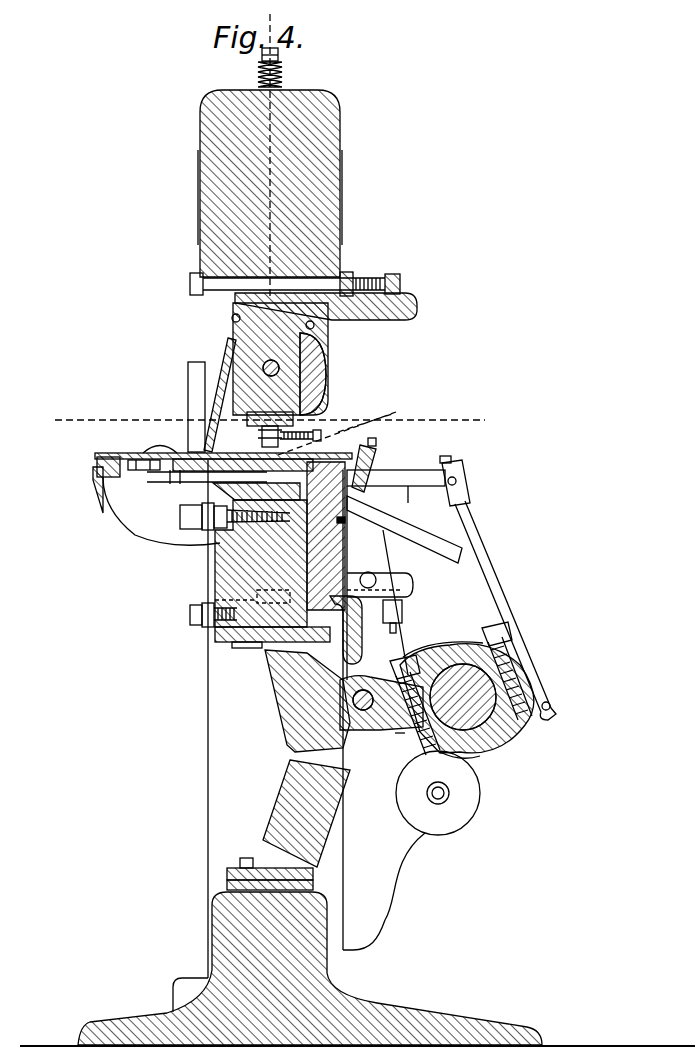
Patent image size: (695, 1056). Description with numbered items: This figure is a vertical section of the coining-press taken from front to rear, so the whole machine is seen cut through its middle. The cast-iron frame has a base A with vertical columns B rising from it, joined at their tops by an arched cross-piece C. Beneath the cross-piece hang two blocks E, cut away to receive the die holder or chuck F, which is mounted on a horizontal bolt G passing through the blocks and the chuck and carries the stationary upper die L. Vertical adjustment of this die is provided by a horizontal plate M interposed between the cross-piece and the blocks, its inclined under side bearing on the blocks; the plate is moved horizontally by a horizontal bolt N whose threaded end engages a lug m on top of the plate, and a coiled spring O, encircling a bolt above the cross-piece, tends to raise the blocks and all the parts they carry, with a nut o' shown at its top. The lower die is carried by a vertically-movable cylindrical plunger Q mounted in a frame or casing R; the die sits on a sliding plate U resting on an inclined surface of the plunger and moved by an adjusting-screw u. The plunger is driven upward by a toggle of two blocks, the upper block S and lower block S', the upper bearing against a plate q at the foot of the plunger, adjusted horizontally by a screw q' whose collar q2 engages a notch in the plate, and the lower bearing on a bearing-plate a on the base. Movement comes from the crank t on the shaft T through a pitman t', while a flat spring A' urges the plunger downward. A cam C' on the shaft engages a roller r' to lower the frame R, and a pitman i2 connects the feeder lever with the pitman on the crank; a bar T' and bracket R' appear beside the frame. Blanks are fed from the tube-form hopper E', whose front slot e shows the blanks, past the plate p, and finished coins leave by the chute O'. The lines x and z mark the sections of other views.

The cross-piece C is at (282, 183).
The coiled spring O is at (257, 74).
The nut o' is at (282, 56).
The horizontal bolt N is at (190, 283).
The lug m is at (392, 273).
The horizontal plate M is at (396, 314).
The block E is at (293, 359).
The horizontal bolt G is at (279, 366).
The die holder or chuck F is at (312, 378).
The upper die L is at (250, 437).
The hopper E' is at (184, 407).
The slot e is at (188, 398).
The plate p is at (322, 446).
The section line z is at (330, 227).
The section line x is at (267, 420).
The frame or casing R is at (259, 703).
The sliding plate U is at (213, 490).
The adjusting-screw u is at (181, 512).
The plunger Q is at (245, 567).
The flat spring A' is at (231, 593).
The collar q2 is at (215, 600).
The screw q' is at (201, 615).
The plate q is at (239, 652).
The column B is at (275, 719).
The bar T' is at (408, 478).
The pitman i2 is at (497, 573).
The chute O' is at (404, 500).
The bracket R' is at (375, 583).
The shaft T is at (437, 682).
The crank t is at (461, 689).
The pitman t' is at (467, 764).
The cam C' is at (389, 738).
The roller r' is at (442, 793).
The toggle-block S is at (300, 701).
The lever arm S' is at (306, 813).
The bearing-plate a is at (227, 876).
The base A is at (357, 969).